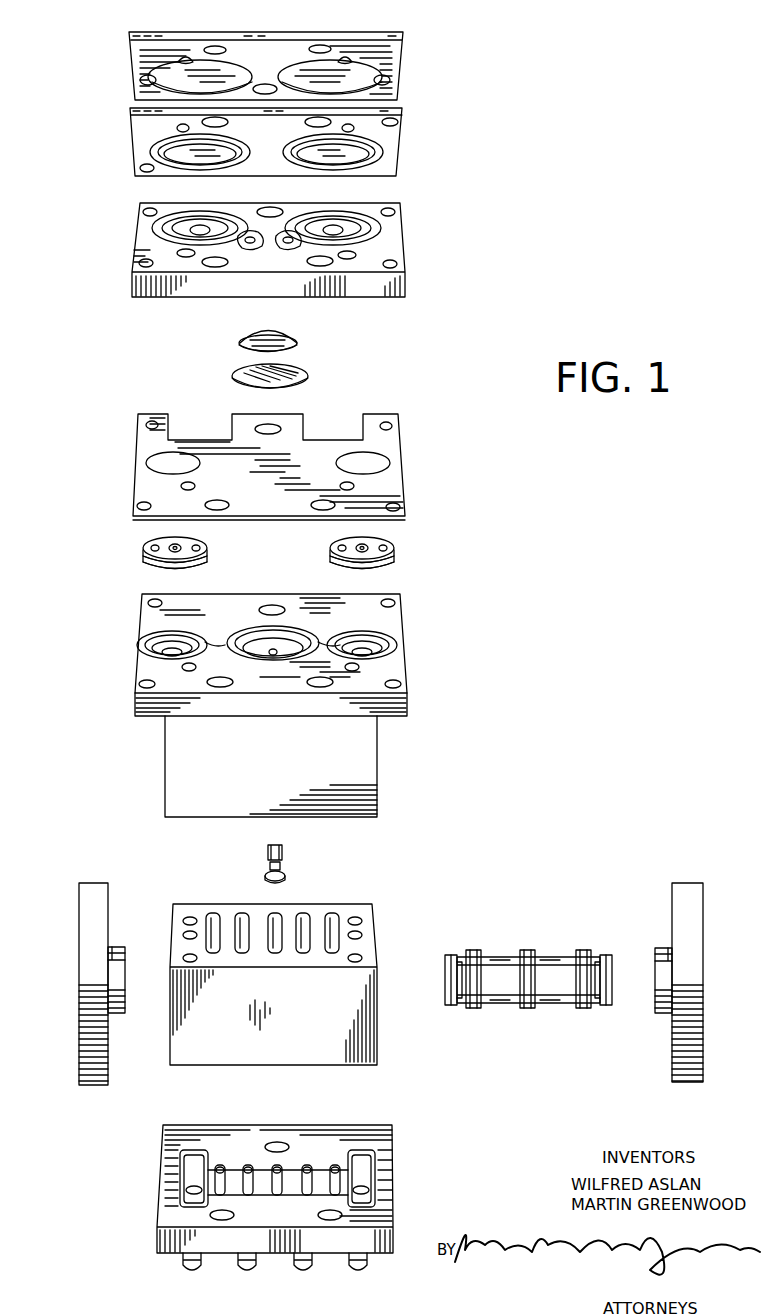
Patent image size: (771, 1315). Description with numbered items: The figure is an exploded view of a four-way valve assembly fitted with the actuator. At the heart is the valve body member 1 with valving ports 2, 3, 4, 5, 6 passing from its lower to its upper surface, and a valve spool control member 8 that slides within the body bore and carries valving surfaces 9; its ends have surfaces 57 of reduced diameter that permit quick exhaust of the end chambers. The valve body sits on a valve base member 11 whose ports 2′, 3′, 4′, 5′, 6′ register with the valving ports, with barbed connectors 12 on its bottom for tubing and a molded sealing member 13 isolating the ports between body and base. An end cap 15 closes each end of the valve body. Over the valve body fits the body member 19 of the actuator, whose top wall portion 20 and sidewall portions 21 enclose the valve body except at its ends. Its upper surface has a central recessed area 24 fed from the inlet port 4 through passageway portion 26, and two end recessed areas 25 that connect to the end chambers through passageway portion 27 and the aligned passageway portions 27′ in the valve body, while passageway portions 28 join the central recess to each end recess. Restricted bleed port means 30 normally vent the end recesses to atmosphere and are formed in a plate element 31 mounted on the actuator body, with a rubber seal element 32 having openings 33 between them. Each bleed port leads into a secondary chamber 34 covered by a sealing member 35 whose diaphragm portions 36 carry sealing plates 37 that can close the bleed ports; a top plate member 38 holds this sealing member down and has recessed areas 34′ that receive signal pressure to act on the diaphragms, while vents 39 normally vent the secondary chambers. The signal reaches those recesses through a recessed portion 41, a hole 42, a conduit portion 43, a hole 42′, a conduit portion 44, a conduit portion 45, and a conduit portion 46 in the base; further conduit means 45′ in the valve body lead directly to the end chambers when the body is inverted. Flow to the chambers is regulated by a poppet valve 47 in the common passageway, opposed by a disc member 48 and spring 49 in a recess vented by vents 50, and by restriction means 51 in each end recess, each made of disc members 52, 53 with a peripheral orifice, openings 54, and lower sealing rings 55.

The valve body member 1 is at (164, 1066).
The valving port 2 is at (213, 912).
The valving port 3 is at (242, 955).
The inlet port 4 is at (276, 912).
The valving port 5 is at (304, 955).
The valving port 6 is at (334, 912).
The base port 2′ is at (220, 1163).
The base port 3′ is at (248, 1163).
The base port 4′ is at (277, 1197).
The base port 5′ is at (307, 1163).
The base port 6′ is at (336, 1163).
The valve spool control member 8 is at (551, 953).
The valving surfaces 9 is at (476, 948).
The valve base member 11 is at (150, 1230).
The barbed connectors 12 is at (245, 1275).
The molded sealing member 13 is at (375, 1157).
The end cap 15 is at (84, 924).
The body member of the actuator 19 is at (160, 766).
The top wall portion 20 is at (400, 672).
The sidewall portions 21 is at (365, 756).
The central recessed area 24 is at (243, 638).
The end recessed areas 25 is at (150, 638).
The passageway portion 26 is at (273, 655).
The passageway portion 27 is at (188, 645).
The passageway portions 27′ is at (183, 935).
The passageway portions 28 is at (215, 645).
The restricted bleed port means 30 is at (205, 226).
The plate element 31 is at (126, 290).
The rubber seal element 32 is at (406, 438).
The openings 33 is at (158, 456).
The secondary chambers 34 is at (158, 226).
The recessed areas 34′ is at (142, 78).
The sealing member 35 is at (400, 176).
The diaphragm portions 36 is at (158, 158).
The sealing plates 37 is at (175, 158).
The top plate member 38 is at (410, 32).
The vents 39 is at (192, 218).
The recessed portion 41 is at (188, 56).
The hole 42 is at (178, 127).
The hole 42′ is at (192, 485).
The conduit portion 43 is at (186, 258).
The conduit portion 44 is at (192, 672).
The conduit portion 45 is at (183, 958).
The further conduit means 45′ is at (190, 915).
The conduit portion 46 is at (188, 1190).
The poppet valve 47 is at (284, 852).
The disc member 48 is at (232, 378).
The spring 49 is at (298, 342).
The vents 50 is at (250, 232).
The restriction means 51 is at (135, 552).
The disc member 52 is at (158, 562).
The disc member 53 is at (178, 570).
The openings 54 is at (152, 545).
The lower sealing rings 55 is at (150, 656).
The surfaces of reduced diameter 57 is at (450, 1008).